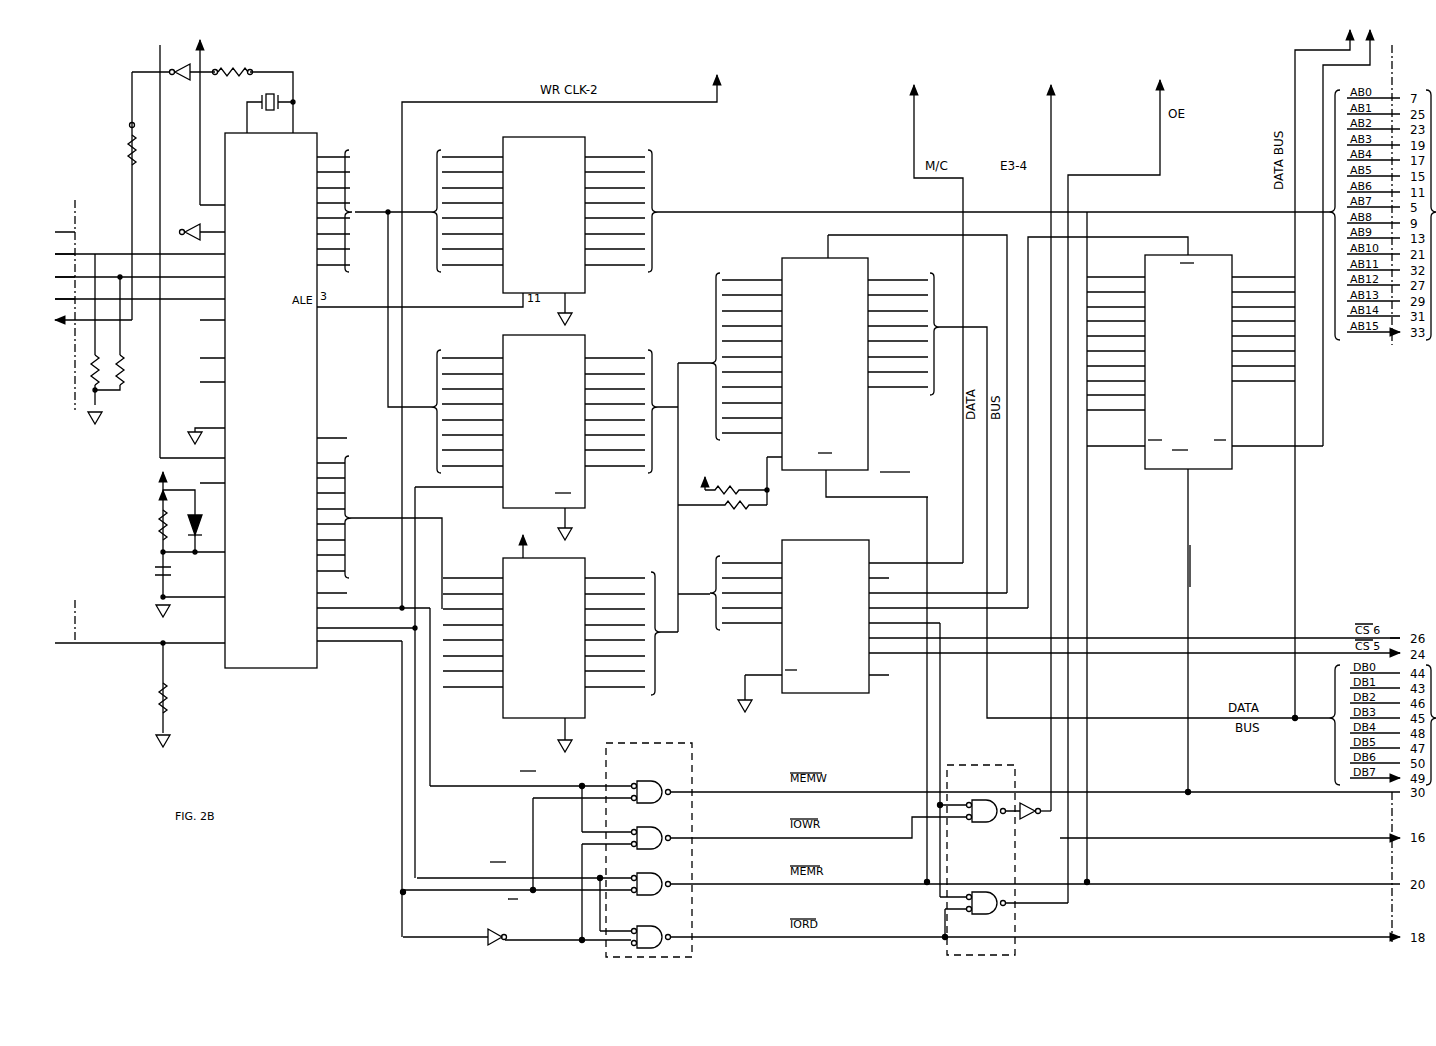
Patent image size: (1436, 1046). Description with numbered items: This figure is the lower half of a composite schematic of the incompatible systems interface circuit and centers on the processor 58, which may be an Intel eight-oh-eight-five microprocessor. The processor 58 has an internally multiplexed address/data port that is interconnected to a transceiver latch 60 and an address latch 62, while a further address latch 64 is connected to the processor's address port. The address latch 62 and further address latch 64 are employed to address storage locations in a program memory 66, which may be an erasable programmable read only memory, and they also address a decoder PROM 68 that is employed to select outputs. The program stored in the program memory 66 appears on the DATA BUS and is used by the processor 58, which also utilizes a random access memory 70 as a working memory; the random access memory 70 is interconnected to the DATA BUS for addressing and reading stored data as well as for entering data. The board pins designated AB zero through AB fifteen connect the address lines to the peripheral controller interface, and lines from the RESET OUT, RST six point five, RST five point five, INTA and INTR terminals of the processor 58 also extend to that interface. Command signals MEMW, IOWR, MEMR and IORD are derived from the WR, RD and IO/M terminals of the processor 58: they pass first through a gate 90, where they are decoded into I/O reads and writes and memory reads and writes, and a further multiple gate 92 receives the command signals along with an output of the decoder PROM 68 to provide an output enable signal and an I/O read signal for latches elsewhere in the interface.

The processor 58 is at (300, 670).
The transceiver latch 60 is at (585, 280).
The address latch 62 is at (585, 493).
The further address latch 64 is at (585, 708).
The program memory 66 is at (868, 408).
The decoder PROM 68 is at (1055, 635).
The random access memory 70 is at (1218, 470).
The gate 90 is at (693, 772).
The further multiple gate 92 is at (983, 757).